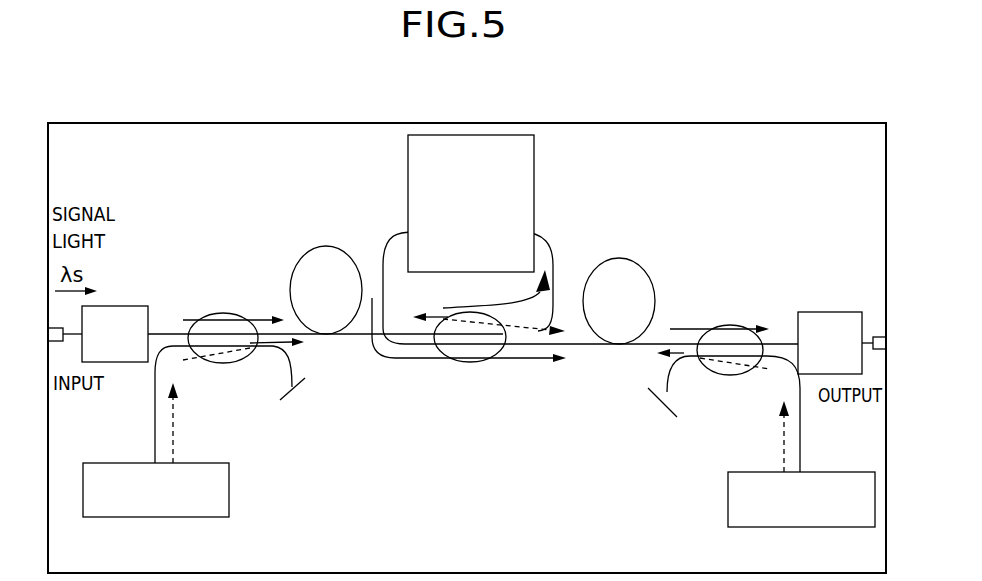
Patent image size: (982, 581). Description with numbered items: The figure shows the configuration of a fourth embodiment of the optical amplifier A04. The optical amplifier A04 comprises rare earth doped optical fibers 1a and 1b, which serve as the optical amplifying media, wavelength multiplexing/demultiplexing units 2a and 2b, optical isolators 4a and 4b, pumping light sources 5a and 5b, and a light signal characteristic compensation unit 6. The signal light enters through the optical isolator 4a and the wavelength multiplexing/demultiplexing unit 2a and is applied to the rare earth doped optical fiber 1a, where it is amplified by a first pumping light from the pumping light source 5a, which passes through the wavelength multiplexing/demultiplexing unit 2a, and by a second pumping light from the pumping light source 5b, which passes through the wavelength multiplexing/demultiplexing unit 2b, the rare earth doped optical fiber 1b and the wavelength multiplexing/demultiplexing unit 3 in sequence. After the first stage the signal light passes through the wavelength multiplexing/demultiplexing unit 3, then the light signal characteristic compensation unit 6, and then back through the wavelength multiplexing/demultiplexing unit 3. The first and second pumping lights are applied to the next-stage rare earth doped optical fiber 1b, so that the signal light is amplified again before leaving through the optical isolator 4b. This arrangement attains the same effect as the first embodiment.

The optical amplifier A04 is at (665, 121).
The rare earth doped optical fiber 1a is at (328, 246).
The rare earth doped optical fiber 1b is at (622, 258).
The wavelength multiplexing/demultiplexing unit 2a is at (223, 313).
The wavelength multiplexing/demultiplexing unit 2b is at (731, 325).
The wavelength multiplexing/demultiplexing unit 3 is at (470, 362).
The optical isolator 4a is at (125, 306).
The optical isolator 4b is at (836, 312).
The pumping light source 5a is at (229, 485).
The pumping light source 5b is at (728, 495).
The light signal characteristic compensation unit 6 is at (534, 165).